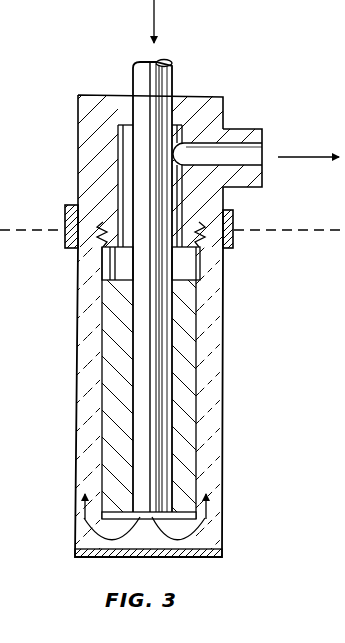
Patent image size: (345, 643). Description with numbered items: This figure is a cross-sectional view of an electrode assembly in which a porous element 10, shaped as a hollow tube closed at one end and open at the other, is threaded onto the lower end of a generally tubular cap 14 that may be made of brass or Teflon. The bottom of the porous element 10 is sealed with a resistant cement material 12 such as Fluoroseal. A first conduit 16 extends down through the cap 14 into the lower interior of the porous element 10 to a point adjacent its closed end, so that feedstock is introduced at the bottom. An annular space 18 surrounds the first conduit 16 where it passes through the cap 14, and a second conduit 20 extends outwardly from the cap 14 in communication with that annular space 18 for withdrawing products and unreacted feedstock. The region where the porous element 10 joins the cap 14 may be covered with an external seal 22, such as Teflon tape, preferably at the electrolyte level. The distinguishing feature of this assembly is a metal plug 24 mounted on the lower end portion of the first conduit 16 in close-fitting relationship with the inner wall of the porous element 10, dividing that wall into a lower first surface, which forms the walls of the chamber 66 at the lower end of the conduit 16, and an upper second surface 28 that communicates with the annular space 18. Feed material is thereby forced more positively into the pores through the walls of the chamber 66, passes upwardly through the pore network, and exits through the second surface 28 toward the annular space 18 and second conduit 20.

The porous element 10 is at (221, 446).
The resistant cement material 12 is at (75, 553).
The tubular cap 14 is at (78, 130).
The first conduit 16 is at (172, 64).
The annular space 18 is at (123, 168).
The second conduit 20 is at (250, 129).
The external seal 22 is at (63, 242).
The metal plug 24 is at (112, 360).
The upper second surface portion 28 is at (200, 262).
The chamber 66 is at (190, 524).